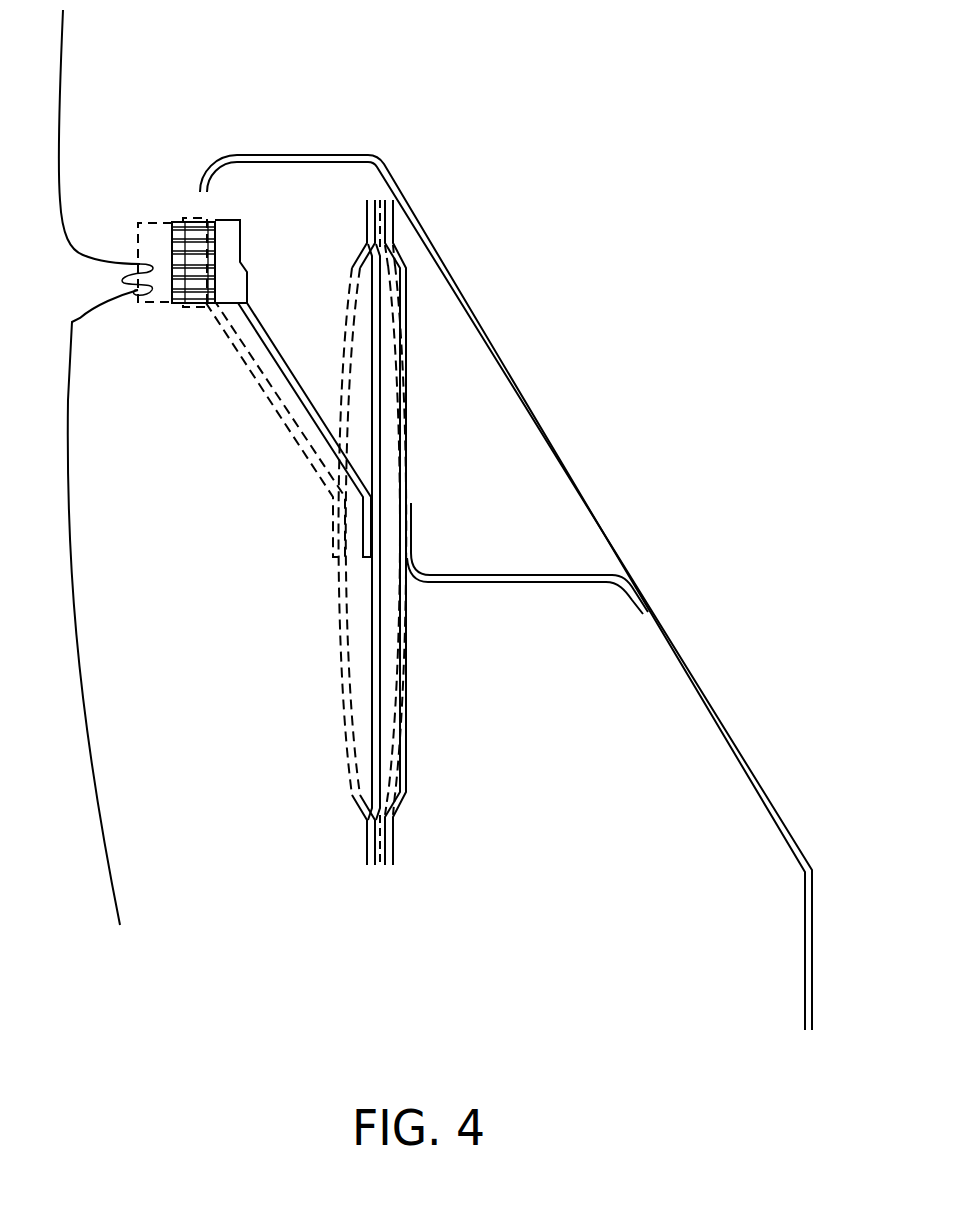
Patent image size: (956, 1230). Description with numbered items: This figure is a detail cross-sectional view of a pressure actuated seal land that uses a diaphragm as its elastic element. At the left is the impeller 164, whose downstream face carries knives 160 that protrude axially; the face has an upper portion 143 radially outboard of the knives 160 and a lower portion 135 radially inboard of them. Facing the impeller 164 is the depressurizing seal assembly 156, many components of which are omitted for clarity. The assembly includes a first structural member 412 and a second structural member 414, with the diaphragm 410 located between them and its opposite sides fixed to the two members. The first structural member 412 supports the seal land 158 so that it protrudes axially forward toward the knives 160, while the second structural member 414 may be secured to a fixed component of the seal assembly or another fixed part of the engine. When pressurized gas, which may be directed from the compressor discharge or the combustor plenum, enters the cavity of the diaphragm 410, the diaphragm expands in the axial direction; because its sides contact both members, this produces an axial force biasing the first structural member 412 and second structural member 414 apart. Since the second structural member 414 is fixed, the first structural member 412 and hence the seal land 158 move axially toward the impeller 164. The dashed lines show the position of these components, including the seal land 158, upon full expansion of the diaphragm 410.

The upper portion of the downstream face of the impeller 143 is at (63, 65).
The lower portion of the downstream face of the impeller 135 is at (78, 645).
The impeller 164 is at (100, 525).
The knives 160 is at (140, 305).
The seal land 158 is at (181, 218).
The first structural member 412 is at (288, 368).
The diaphragm 410 is at (408, 657).
The second structural member 414 is at (543, 583).
The depressurizing seal assembly 156 is at (419, 519).